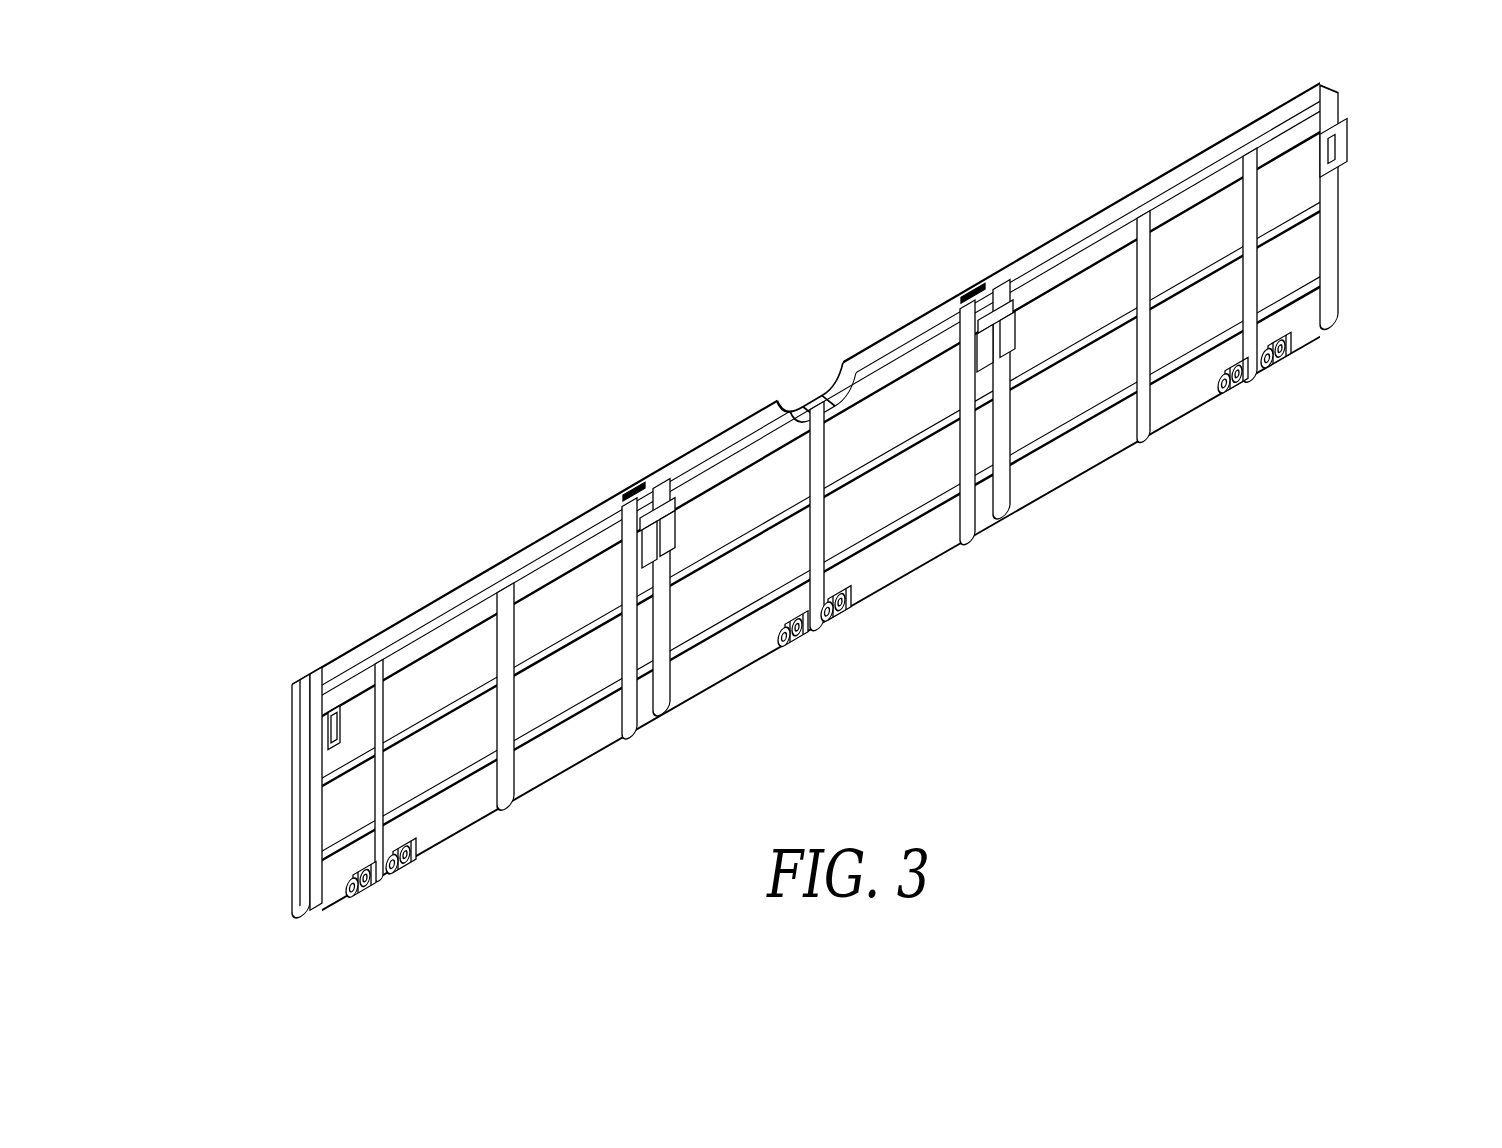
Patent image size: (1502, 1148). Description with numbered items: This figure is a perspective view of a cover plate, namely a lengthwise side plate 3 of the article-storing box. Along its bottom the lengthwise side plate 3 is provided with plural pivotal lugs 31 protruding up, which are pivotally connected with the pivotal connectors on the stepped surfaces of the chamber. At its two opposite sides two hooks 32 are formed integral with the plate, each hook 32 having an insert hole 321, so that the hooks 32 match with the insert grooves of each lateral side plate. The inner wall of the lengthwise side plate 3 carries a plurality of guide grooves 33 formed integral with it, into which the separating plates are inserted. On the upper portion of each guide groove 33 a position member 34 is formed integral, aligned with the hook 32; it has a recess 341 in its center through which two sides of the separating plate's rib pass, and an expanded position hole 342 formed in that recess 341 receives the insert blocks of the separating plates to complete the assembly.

The lengthwise side plate 3 is at (865, 515).
The pivotal lugs 31 is at (398, 866).
The hooks 32 is at (328, 744).
The insert hole 321 is at (340, 742).
The guide grooves 33 is at (660, 693).
The position member 34 is at (660, 505).
The recess 341 is at (655, 520).
The position holes 342 is at (680, 553).